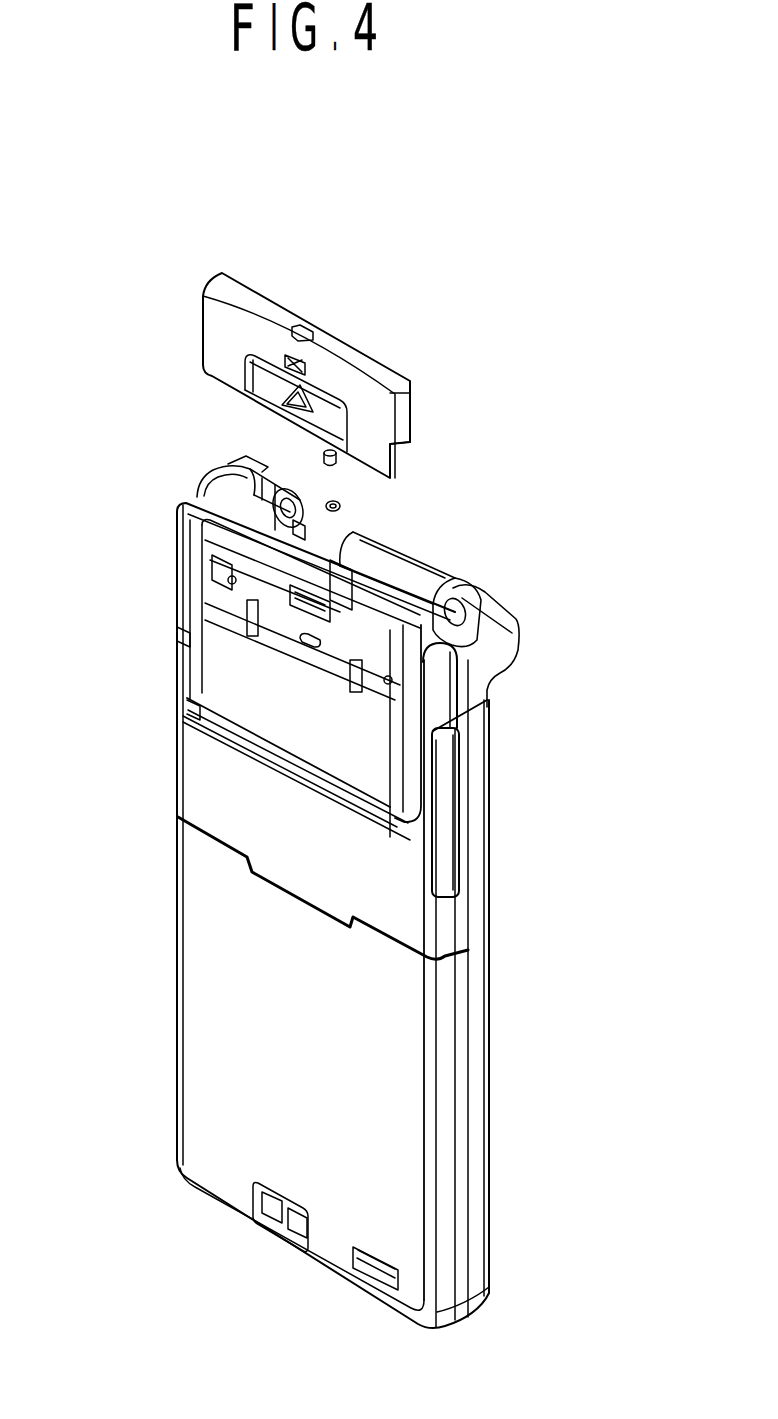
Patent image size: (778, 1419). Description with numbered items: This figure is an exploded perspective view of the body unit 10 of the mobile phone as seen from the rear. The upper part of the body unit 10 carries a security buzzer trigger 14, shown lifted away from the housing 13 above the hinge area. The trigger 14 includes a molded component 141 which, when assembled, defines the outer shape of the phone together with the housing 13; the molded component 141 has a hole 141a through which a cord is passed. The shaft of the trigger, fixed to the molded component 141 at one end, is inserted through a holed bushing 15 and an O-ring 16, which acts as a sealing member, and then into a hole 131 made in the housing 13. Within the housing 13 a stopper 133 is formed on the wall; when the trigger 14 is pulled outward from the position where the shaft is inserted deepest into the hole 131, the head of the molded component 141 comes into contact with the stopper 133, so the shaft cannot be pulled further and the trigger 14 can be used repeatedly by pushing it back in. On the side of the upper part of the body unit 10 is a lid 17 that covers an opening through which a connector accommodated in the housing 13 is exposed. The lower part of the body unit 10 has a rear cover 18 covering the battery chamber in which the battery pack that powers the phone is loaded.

The body unit 10 is at (145, 585).
The housing 13 is at (478, 917).
The security buzzer trigger 14 is at (255, 248).
The molded component 141 is at (352, 368).
The hole 141a is at (300, 325).
The holed bushing 15 is at (320, 460).
The O-ring 16 is at (342, 505).
The lid 17 is at (468, 777).
The rear cover 18 is at (388, 1028).
The hole 131 is at (340, 595).
The stopper 133 is at (337, 588).